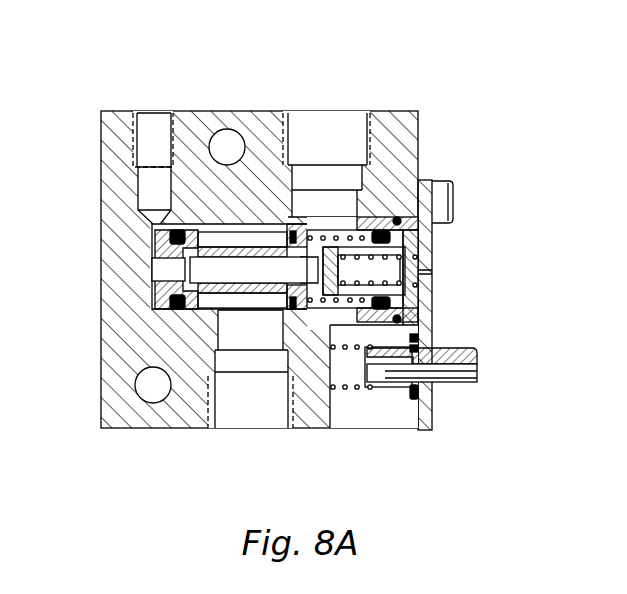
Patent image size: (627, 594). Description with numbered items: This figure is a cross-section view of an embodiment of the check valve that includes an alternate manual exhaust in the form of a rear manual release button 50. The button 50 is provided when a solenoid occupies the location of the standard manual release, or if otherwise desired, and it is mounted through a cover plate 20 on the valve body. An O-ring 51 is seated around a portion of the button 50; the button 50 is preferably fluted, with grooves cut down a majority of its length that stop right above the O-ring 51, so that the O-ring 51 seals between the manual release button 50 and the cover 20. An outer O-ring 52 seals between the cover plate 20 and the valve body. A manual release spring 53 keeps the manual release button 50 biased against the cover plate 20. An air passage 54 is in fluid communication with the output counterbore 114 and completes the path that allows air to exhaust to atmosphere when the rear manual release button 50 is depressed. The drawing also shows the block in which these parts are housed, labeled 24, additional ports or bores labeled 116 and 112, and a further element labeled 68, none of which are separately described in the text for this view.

The manifold block 24 is at (378, 112).
The cover plate 20 is at (430, 260).
The port 116 is at (150, 112).
The output counterbore 114 is at (324, 112).
The port 112 is at (262, 412).
The air passage 54 is at (302, 333).
The O-ring 51 is at (428, 348).
The pin 68 is at (420, 271).
The manual release spring 53 is at (362, 405).
The rear manual release button 50 is at (470, 352).
The outer O-ring 52 is at (427, 393).